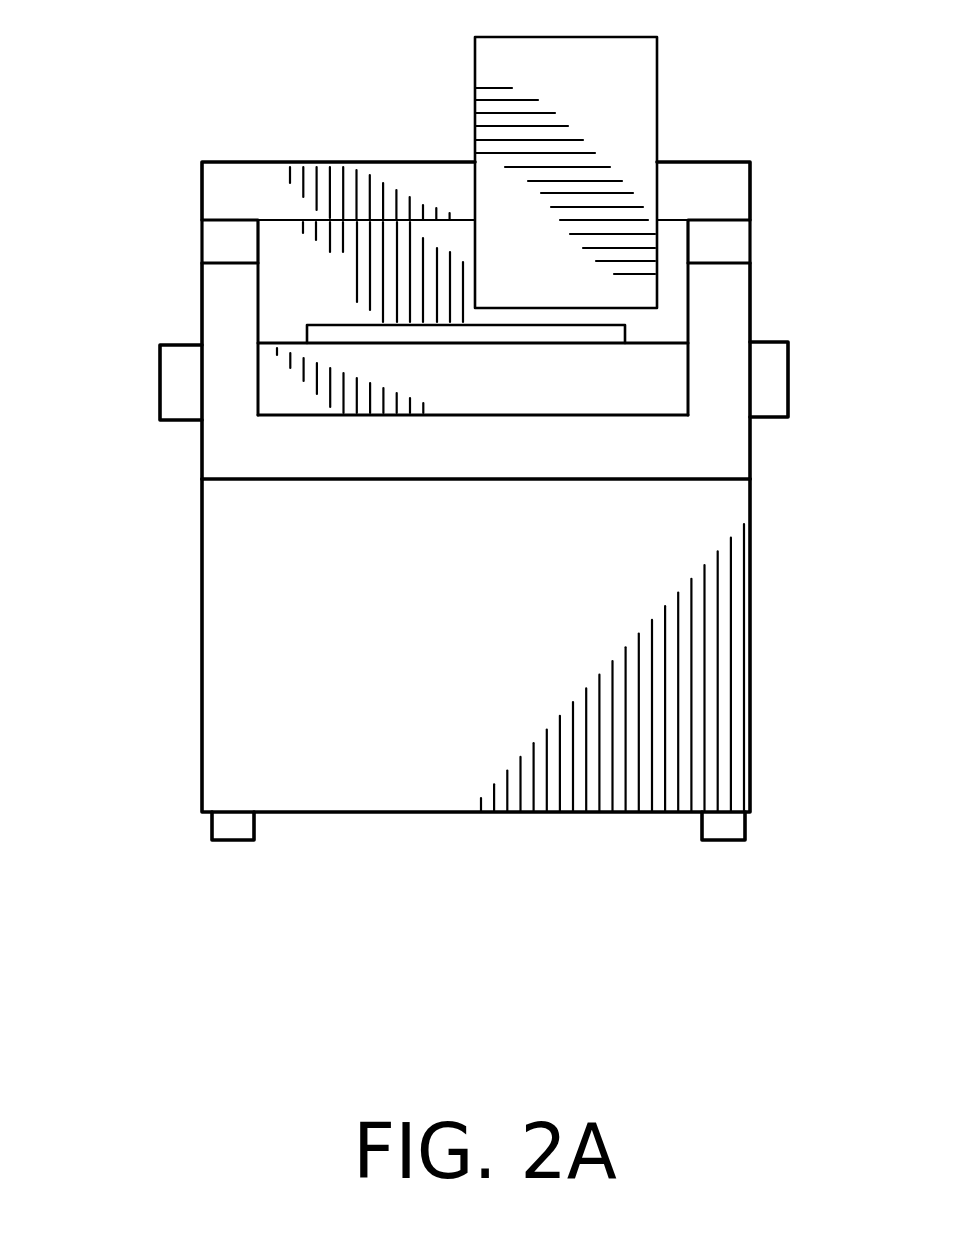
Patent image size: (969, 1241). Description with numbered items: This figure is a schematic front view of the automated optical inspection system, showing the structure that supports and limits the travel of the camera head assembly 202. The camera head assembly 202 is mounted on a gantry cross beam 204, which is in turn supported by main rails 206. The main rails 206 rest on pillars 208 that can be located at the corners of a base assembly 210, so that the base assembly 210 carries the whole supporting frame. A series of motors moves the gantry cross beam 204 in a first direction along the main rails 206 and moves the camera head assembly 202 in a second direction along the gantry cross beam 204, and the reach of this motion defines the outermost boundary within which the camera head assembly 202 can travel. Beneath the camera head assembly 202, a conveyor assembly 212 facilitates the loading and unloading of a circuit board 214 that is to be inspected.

The camera head assembly 202 is at (622, 108).
The gantry cross beam 204 is at (362, 162).
The main rails 206 is at (223, 240).
The pillars 208 is at (218, 342).
The base assembly 210 is at (652, 458).
The conveyor assembly 212 is at (498, 401).
The circuit board 214 is at (348, 322).